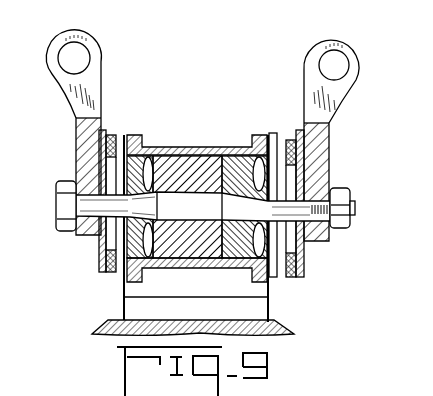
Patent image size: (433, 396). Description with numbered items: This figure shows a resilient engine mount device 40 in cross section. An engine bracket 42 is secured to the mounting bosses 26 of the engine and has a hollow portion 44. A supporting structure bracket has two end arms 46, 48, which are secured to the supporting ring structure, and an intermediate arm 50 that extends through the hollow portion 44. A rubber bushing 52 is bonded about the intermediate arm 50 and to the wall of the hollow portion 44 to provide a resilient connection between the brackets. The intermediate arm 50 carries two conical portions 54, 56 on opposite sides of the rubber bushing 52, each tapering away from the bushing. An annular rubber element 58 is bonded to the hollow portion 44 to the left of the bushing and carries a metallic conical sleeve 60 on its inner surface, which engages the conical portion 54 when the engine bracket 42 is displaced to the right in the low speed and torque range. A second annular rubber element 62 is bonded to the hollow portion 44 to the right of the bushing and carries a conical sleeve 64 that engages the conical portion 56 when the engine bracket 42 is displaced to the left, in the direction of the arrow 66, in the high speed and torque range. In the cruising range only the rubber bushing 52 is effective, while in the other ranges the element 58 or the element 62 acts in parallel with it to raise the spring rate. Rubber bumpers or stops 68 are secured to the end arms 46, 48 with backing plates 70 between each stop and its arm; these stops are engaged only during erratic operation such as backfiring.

The mounting bosses 26 is at (276, 321).
The resilient engine mount device 40 is at (237, 99).
The engine bracket 42 is at (157, 138).
The hollow portion 44 is at (216, 157).
The end arm 46 is at (337, 108).
The end arm 48 is at (73, 97).
The intermediate arm 50 is at (205, 206).
The rubber bushing 52 is at (185, 141).
The conical portion 54 is at (125, 238).
The conical portion 56 is at (238, 266).
The annular rubber element 58 is at (136, 143).
The metallic conical sleeve 60 is at (216, 207).
The annular rubber element 62 is at (243, 147).
The conical sleeve 64 is at (270, 193).
The arrow 66 is at (106, 302).
The rubber bumpers or stops 68 is at (111, 135).
The backing plates 70 is at (102, 130).